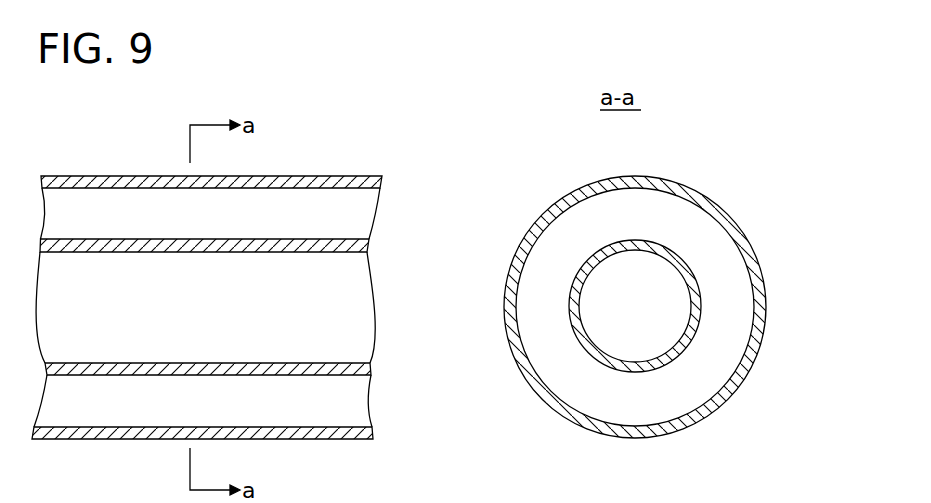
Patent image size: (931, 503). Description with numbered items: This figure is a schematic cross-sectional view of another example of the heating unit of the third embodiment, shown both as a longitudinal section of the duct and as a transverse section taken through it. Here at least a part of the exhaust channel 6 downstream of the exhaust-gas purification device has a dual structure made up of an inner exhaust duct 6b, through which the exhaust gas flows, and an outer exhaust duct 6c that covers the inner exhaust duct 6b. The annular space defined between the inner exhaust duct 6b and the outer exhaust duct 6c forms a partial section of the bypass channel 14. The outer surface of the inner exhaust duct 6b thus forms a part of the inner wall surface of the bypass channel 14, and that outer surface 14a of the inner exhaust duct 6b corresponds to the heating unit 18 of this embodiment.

The exhaust channel 6 is at (211, 319).
The inner exhaust duct 6b is at (350, 241).
The outer exhaust duct 6c is at (355, 177).
The bypass channel 14 is at (215, 227).
The outer surface of the inner exhaust duct 14a is at (289, 240).
The heating unit 18 is at (666, 163).